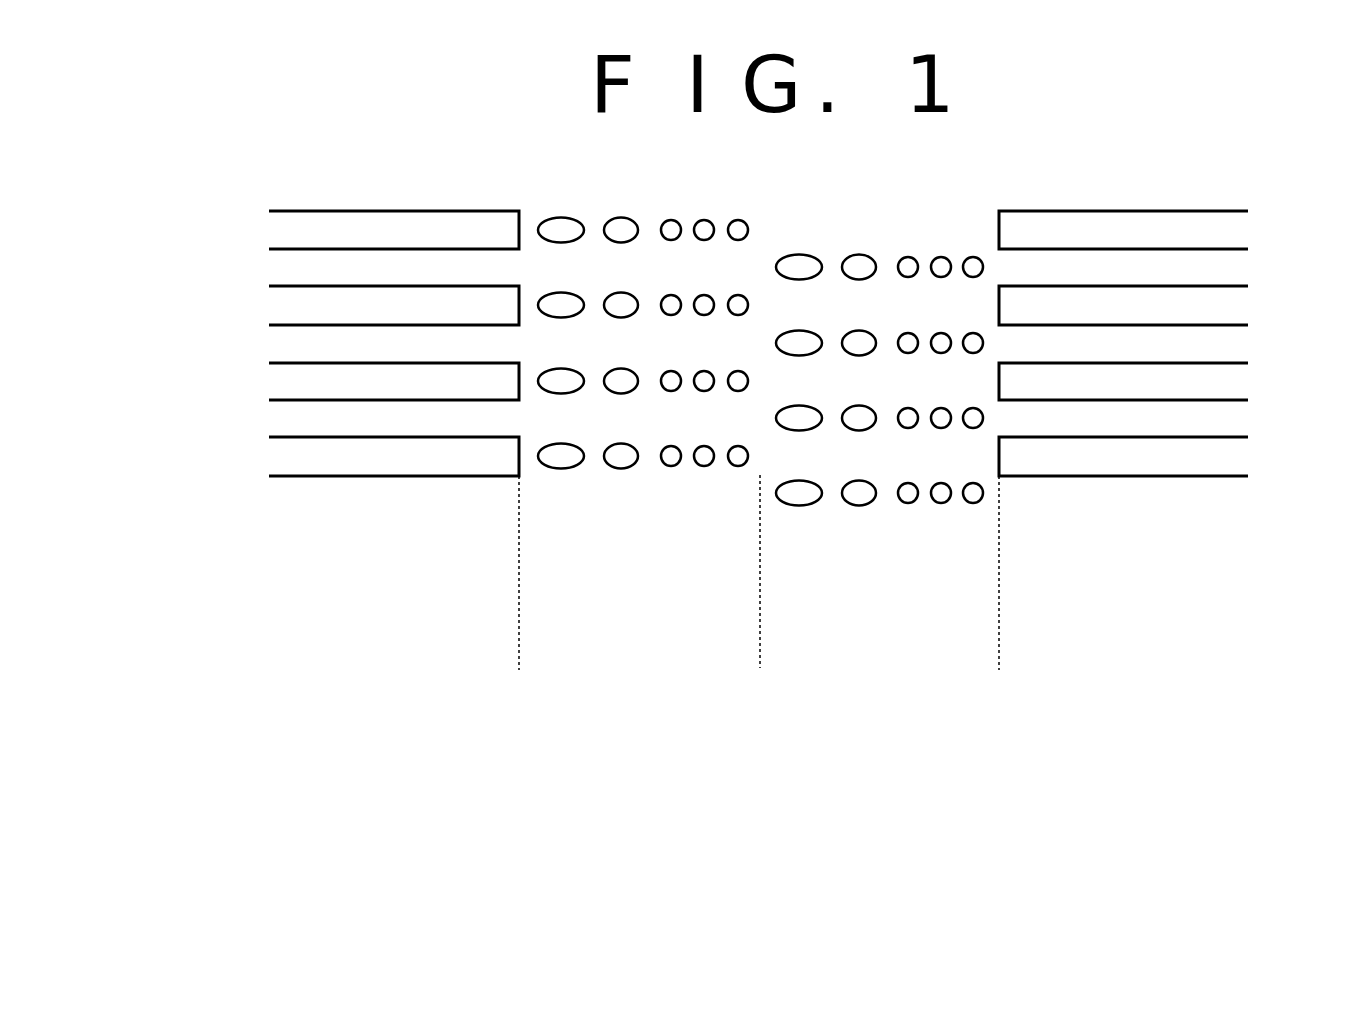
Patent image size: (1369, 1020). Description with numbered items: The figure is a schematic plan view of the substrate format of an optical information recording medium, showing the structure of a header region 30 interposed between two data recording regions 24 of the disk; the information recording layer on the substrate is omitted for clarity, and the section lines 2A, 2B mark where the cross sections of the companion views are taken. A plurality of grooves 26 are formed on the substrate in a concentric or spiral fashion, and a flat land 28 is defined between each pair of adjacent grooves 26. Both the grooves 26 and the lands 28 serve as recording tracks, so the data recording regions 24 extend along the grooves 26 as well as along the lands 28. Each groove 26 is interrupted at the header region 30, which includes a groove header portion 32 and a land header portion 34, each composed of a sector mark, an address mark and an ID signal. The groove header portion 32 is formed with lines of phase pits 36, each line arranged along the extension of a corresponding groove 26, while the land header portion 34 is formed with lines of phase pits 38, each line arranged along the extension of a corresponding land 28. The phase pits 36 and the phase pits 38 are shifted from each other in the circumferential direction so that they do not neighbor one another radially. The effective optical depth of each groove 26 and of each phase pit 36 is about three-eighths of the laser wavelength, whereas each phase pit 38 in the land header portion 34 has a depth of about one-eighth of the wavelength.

The section line 2A— 2A is at (268, 230).
The section line 2B— 2B is at (268, 268).
The data recording region 24 is at (761, 450).
The groove 26 is at (287, 382).
The land 28 is at (287, 344).
The header region 30 is at (759, 454).
The groove header portion 32 is at (643, 438).
The land header portion 34 is at (879, 455).
The phase pit 36 is at (548, 297).
The phase pit 38 is at (973, 333).